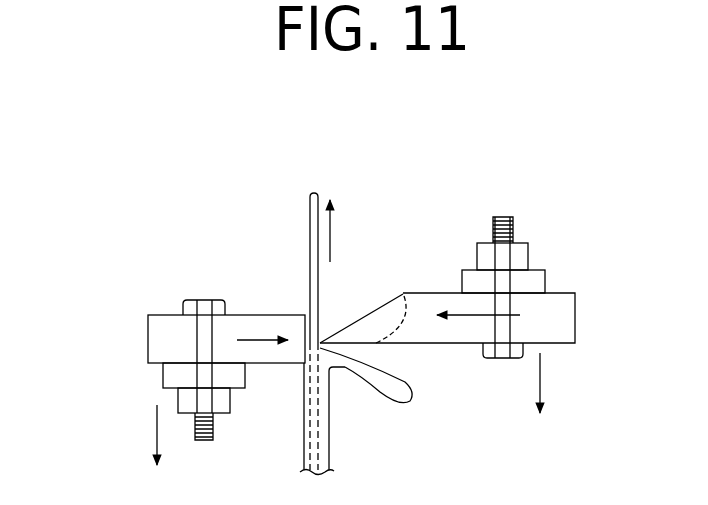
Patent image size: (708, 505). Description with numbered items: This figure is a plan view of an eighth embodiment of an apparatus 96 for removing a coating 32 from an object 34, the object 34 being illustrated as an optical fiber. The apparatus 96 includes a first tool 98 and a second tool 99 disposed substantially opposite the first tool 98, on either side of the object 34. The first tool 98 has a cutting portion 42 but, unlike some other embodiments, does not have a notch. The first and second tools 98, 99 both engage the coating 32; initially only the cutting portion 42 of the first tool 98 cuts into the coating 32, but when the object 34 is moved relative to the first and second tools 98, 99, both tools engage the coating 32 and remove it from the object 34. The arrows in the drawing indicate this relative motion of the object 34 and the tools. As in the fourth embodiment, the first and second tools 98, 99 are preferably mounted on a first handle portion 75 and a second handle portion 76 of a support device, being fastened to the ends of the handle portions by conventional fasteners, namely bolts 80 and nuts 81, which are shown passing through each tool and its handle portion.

The coating 32 is at (333, 443).
The object 34 is at (307, 242).
The cutting portion 42 is at (322, 342).
The first handle portion 75 is at (535, 278).
The second handle portion 76 is at (160, 375).
The bolts 80 is at (205, 308).
The nuts 81 is at (230, 397).
The apparatus 96 is at (496, 167).
The first tool 98 is at (565, 313).
The second tool 99 is at (148, 343).